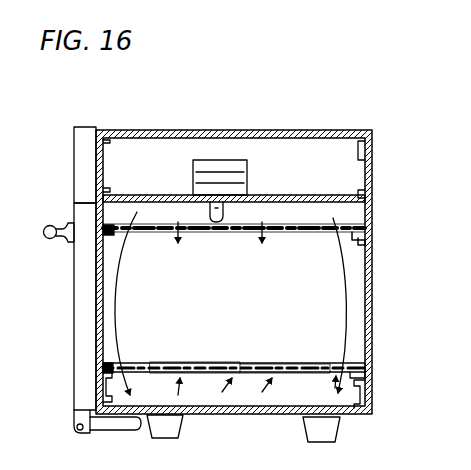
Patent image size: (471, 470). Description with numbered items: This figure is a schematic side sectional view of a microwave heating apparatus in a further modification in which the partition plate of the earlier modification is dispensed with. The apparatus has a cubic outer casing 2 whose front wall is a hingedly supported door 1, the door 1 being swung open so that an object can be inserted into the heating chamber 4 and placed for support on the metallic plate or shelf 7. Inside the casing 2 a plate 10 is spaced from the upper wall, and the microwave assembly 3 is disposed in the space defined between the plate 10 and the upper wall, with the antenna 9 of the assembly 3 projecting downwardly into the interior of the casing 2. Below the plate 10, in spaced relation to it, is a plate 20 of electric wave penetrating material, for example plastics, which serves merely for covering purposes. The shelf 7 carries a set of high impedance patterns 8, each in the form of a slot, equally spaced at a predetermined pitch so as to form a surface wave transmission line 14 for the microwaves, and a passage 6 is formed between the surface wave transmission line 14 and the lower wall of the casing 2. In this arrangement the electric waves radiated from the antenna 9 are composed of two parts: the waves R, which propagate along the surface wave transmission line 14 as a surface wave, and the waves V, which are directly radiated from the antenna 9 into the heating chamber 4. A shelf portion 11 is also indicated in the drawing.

The door 1 is at (80, 330).
The outer casing 2 is at (175, 130).
The microwave assembly 3 is at (235, 162).
The heating chamber 4 is at (230, 303).
The passage 6 is at (247, 402).
The metallic plate or shelf 7 is at (295, 373).
The high impedance patterns 8 is at (290, 373).
The antenna 9 is at (223, 208).
The plate 10 is at (286, 197).
The perforated shelf 11 is at (143, 365).
The surface wave transmission line 14 is at (205, 365).
The plate of electric wave penetrating material 20 is at (222, 233).
The waves R is at (117, 292).
The waves V is at (291, 252).